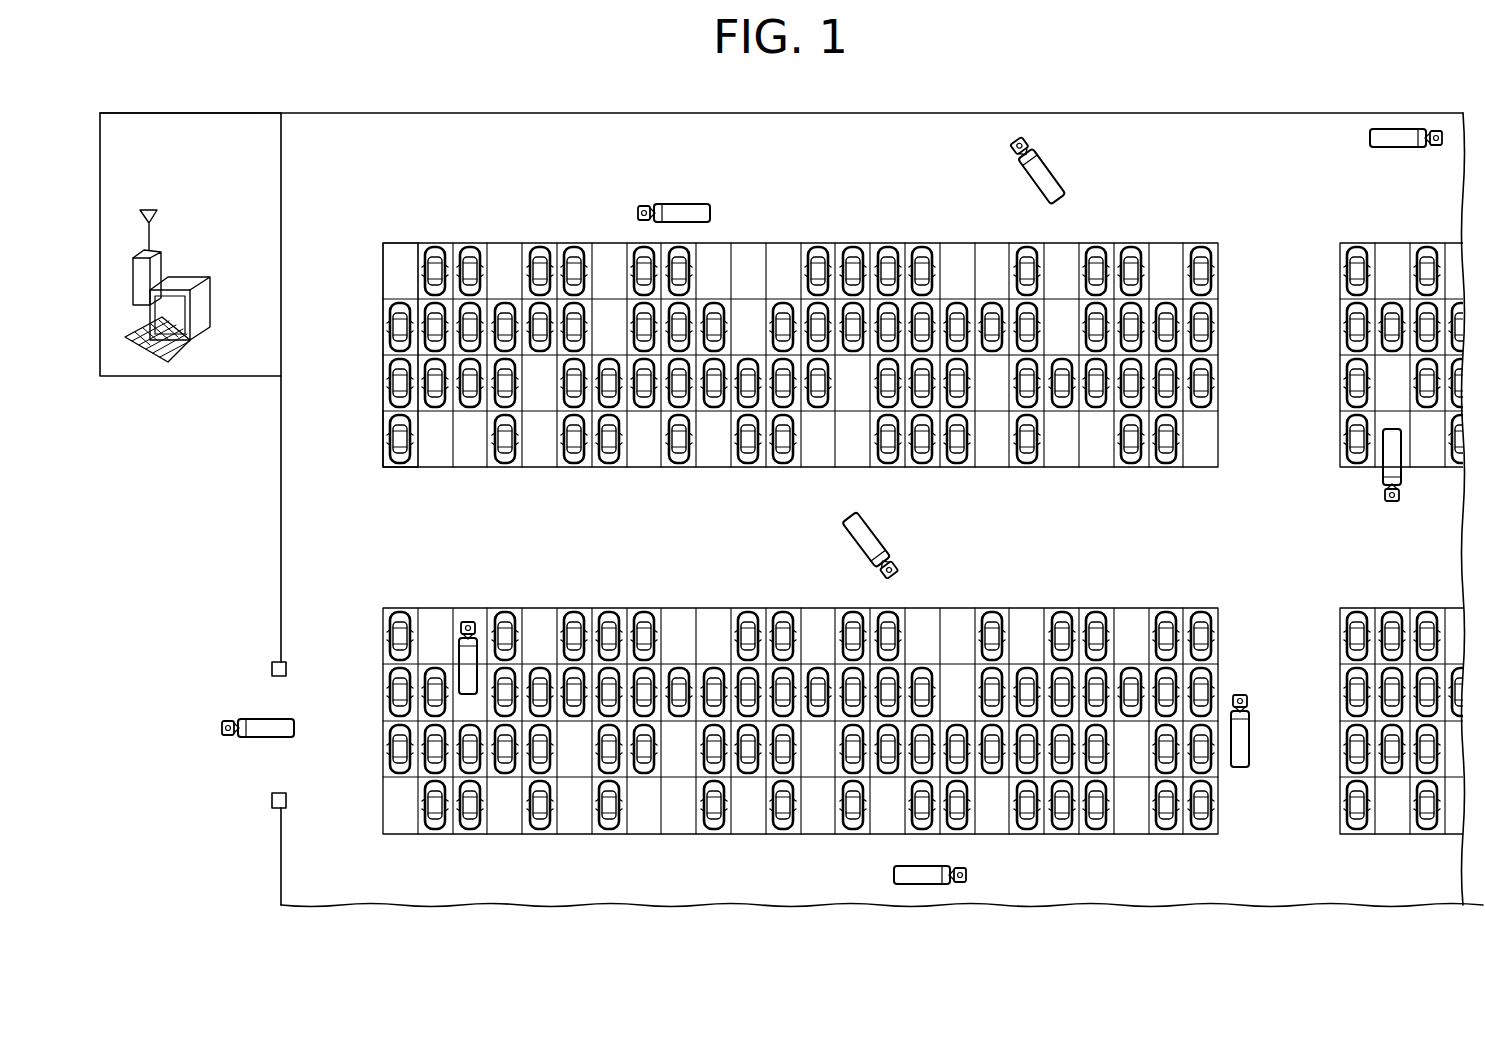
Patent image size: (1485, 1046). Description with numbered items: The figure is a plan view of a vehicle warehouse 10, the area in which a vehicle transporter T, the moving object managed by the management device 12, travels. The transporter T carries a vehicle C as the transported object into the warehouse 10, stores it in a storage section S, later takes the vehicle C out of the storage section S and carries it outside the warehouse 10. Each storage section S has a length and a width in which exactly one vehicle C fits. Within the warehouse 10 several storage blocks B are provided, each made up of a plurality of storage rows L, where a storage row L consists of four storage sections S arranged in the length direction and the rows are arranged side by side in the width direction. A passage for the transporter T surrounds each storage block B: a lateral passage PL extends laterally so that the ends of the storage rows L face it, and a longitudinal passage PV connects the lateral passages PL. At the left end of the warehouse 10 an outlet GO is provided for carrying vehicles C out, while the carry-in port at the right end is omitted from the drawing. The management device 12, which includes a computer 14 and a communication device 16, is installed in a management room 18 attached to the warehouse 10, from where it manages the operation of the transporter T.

The warehouse 10 is at (887, 78).
The management device 12 is at (190, 251).
The computer 14 is at (190, 290).
The communication device 16 is at (157, 252).
The management room 18 is at (172, 113).
The storage block B is at (539, 221).
The vehicle C is at (437, 249).
The transporter T is at (683, 205).
The storage section S is at (383, 262).
The storage row L is at (391, 472).
The outlet GO is at (278, 688).
The lateral passage PL is at (782, 538).
The longitudinal passage PV is at (805, 581).